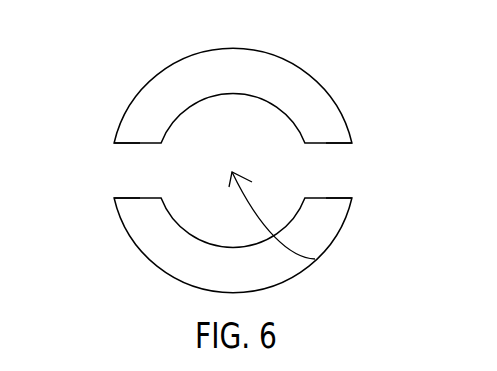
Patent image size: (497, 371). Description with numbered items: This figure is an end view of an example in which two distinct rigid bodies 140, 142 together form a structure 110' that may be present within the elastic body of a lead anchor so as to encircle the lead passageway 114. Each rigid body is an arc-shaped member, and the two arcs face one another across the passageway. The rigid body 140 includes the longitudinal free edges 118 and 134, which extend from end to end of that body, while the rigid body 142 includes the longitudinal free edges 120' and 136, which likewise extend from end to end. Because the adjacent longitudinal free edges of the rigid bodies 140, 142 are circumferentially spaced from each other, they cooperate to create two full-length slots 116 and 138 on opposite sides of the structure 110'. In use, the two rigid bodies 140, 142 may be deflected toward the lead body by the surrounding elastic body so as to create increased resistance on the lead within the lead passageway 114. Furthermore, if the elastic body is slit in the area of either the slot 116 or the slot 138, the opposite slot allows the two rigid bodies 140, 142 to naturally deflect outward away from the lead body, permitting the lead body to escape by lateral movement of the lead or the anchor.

The structure 110' is at (251, 164).
The lead passageway 114 is at (315, 259).
The slot 116 is at (137, 167).
The longitudinal free edge 118 is at (114, 143).
The longitudinal free edge 120' is at (103, 217).
The longitudinal free edge 134 is at (352, 143).
The longitudinal free edge 136 is at (352, 200).
The slot 138 is at (339, 168).
The rigid body 140 is at (273, 78).
The rigid body 142 is at (160, 235).